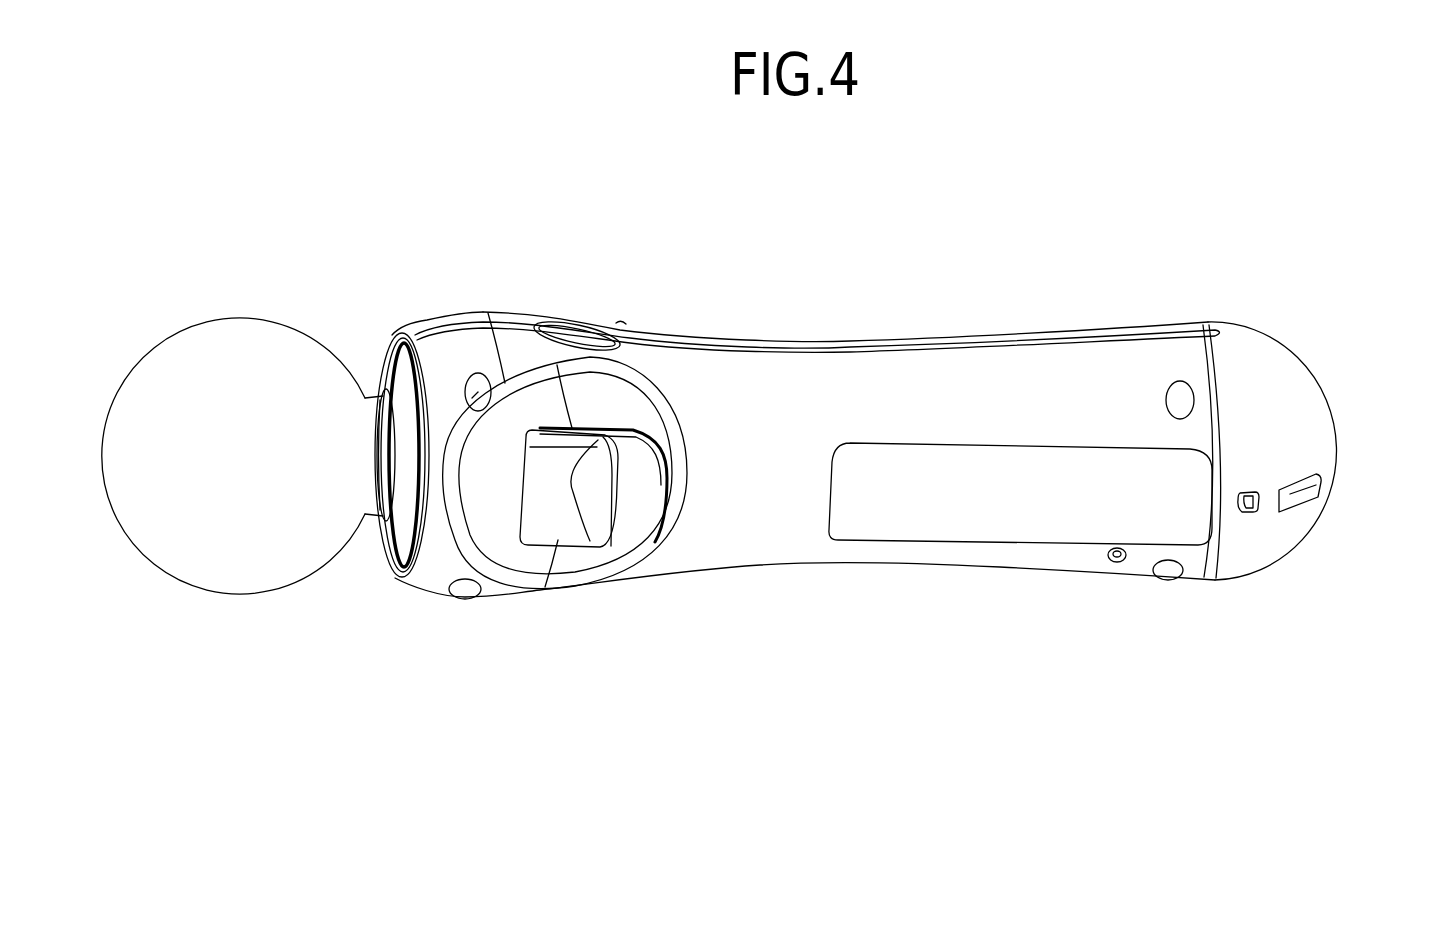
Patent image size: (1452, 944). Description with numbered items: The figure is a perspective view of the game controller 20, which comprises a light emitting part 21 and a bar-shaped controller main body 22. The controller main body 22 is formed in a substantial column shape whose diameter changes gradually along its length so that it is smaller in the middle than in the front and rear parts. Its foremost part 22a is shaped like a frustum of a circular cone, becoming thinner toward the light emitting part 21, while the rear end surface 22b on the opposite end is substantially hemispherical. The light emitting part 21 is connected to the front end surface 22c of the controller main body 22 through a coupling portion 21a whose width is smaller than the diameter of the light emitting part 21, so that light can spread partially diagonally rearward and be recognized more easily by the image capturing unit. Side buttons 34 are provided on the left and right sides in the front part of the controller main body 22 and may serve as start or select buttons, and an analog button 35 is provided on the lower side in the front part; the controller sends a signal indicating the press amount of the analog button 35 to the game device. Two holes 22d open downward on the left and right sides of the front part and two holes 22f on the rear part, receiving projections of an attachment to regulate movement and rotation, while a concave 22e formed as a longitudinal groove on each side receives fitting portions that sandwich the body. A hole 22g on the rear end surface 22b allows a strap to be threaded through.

The game controller 20 is at (1136, 274).
The light emitting part 21 is at (247, 317).
The coupling portion 21a is at (377, 397).
The controller main body 22 is at (850, 330).
The foremost part 22a is at (455, 312).
The rear end surface 22b is at (1302, 422).
The front end surface 22c is at (402, 540).
The holes 22d is at (472, 398).
The concave 22e is at (998, 343).
The holes 22f is at (1183, 405).
The hole 22g is at (1315, 493).
The side button 34 is at (577, 337).
The analog button 35 is at (623, 520).